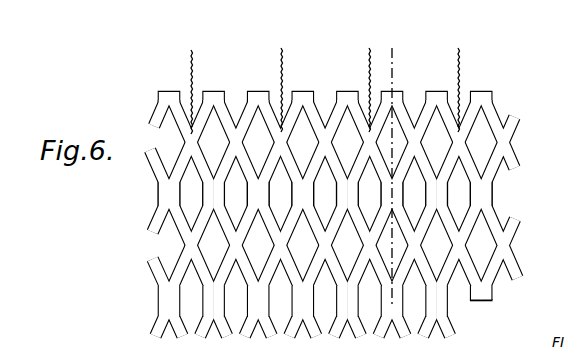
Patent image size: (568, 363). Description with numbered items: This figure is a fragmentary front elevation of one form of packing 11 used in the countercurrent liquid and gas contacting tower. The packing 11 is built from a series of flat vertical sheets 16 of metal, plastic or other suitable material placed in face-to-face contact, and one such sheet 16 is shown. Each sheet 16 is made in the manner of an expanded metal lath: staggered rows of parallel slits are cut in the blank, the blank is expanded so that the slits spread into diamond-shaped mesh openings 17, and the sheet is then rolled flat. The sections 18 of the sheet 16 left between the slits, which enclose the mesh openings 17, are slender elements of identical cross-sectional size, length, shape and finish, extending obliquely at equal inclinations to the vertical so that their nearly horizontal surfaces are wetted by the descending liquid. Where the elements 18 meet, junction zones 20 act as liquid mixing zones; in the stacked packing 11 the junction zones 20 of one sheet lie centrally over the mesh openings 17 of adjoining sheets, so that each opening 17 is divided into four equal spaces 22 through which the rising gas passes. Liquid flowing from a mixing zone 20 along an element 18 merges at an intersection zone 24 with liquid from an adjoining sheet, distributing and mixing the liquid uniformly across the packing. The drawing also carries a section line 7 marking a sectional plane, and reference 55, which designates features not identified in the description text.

The packing 11 is at (526, 143).
The flat vertical sheet 16 is at (494, 93).
The mesh openings 17 is at (224, 122).
The slender elements 18 is at (186, 150).
The junction zones 20 is at (210, 190).
The equal spaces 22 is at (438, 195).
The intersection zone 24 is at (342, 118).
The fibers 55 is at (182, 58).
The section line 7- 7 is at (401, 61).